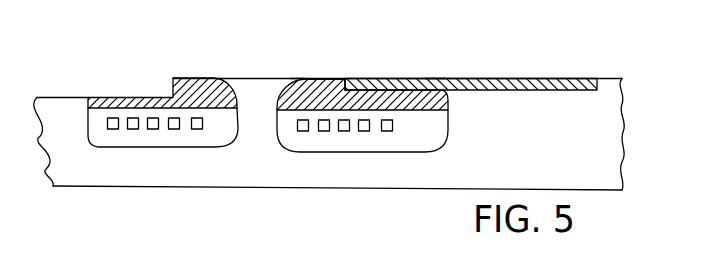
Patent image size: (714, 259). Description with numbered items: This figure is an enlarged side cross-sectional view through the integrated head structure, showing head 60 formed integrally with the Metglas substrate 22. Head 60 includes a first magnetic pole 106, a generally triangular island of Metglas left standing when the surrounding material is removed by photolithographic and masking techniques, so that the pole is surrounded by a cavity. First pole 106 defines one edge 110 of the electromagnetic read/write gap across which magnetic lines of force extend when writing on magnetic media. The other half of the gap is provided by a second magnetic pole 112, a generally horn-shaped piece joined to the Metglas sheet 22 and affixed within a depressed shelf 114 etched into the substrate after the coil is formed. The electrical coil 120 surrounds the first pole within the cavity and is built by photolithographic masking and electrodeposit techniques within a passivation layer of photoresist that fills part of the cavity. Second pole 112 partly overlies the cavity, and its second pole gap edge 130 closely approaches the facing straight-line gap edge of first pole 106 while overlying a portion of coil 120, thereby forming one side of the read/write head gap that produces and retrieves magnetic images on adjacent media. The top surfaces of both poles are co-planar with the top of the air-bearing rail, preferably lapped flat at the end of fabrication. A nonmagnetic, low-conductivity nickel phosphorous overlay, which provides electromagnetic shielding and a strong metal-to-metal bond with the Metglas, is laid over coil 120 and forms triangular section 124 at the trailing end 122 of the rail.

The substrate 22 is at (603, 112).
The head 60 is at (313, 61).
The first magnetic pole 106 is at (256, 93).
The edge of electromagnetic read/write gap 110 is at (322, 78).
The second magnetic pole 112 is at (433, 79).
The depressed shelf 114 is at (542, 79).
The electrical coil 120 is at (197, 129).
The trailing end 122 is at (173, 77).
The triangular section 124 is at (337, 78).
The second pole gap edge 130 is at (347, 79).